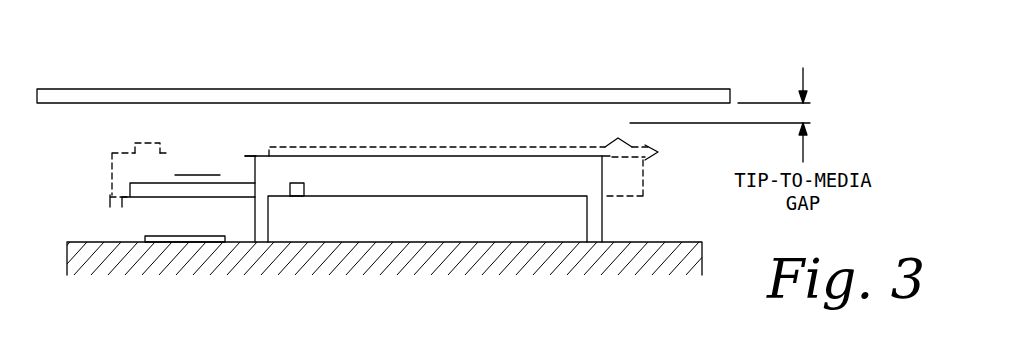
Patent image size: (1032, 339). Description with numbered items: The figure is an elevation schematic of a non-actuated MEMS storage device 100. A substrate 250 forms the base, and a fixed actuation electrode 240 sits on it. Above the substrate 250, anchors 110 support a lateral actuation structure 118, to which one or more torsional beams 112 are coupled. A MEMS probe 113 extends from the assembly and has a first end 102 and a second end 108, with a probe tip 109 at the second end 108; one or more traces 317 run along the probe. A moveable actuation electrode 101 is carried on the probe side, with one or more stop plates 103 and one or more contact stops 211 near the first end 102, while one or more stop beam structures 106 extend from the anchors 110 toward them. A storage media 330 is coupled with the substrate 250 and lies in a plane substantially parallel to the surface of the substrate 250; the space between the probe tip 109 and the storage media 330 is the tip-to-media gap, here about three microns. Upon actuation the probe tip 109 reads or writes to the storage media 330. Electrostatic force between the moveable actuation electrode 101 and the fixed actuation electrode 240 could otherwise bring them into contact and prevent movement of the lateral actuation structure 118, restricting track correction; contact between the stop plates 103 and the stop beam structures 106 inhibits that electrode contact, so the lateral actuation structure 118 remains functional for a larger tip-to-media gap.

The MEMS storage device 100 is at (713, 58).
The moveable actuation electrode 101 is at (197, 160).
The first end 102 is at (117, 170).
The stop plates 103 is at (138, 143).
The stop beam structures 106 is at (220, 188).
The second end 108 is at (637, 183).
The probe tip 109 is at (625, 129).
The anchors 110 is at (265, 232).
The torsional beams 112 is at (298, 193).
The MEMS probe 113 is at (240, 170).
The lateral actuation structure 118 is at (430, 183).
The contact stops 211 is at (110, 204).
The fixed actuation electrode 240 is at (178, 242).
The substrate 250 is at (453, 263).
The traces 317 is at (413, 147).
The storage media 330 is at (182, 93).